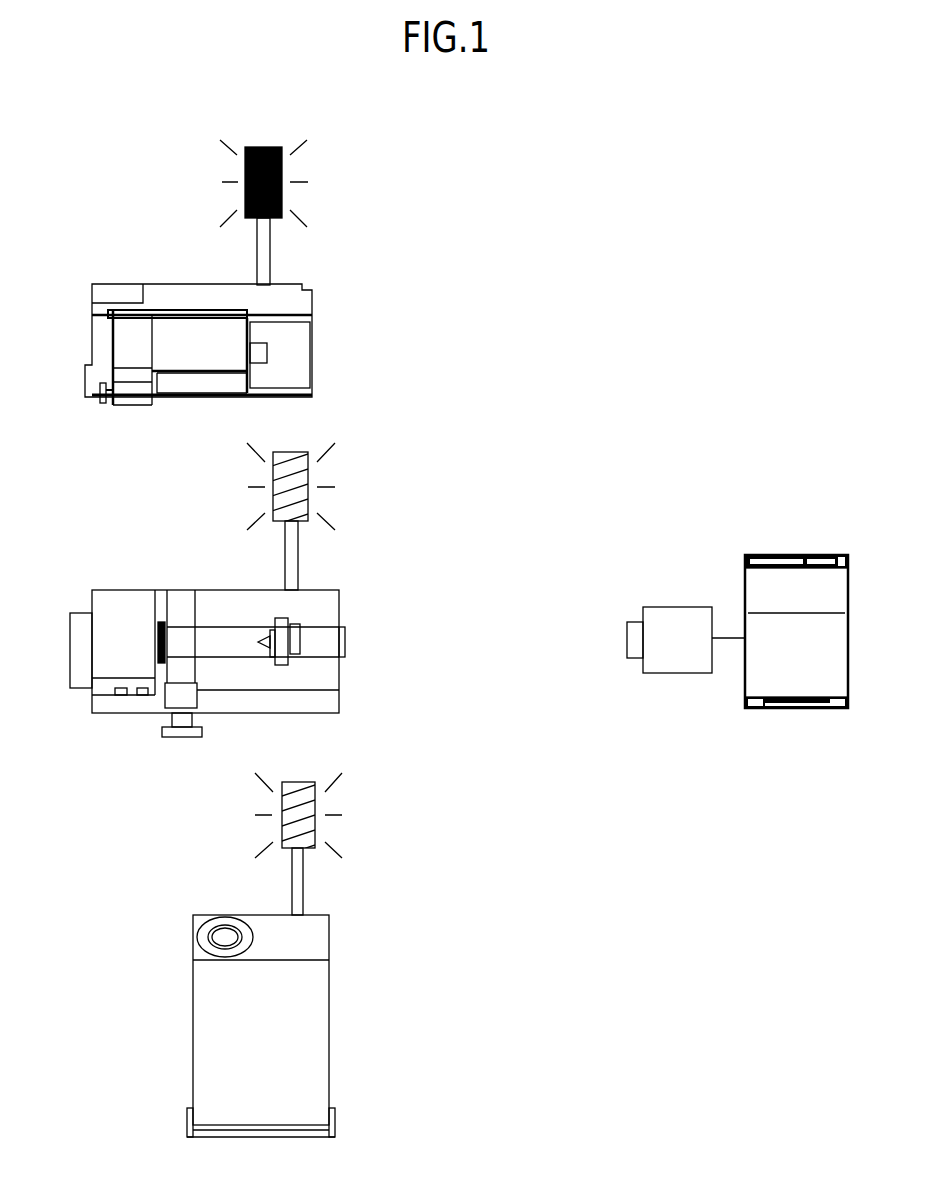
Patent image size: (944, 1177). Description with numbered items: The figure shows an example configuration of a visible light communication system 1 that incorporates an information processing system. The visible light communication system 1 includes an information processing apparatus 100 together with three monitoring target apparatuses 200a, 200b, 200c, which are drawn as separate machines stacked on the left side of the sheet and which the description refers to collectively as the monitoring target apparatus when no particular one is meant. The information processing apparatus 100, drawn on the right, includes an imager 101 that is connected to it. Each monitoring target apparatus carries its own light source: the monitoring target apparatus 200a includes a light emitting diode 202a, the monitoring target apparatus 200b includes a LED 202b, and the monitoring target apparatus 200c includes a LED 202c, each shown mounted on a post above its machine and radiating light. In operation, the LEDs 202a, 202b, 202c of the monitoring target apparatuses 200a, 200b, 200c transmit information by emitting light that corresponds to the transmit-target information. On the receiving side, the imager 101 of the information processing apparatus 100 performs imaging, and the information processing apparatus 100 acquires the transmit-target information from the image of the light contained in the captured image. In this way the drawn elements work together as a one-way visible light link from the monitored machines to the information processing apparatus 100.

The visible light communication system 1 is at (667, 217).
The information processing apparatus 100 is at (795, 553).
The imager 101 is at (678, 607).
The monitoring target apparatus 200a is at (120, 285).
The monitoring target apparatus 200b is at (135, 590).
The monitoring target apparatus 200c is at (193, 995).
The light emitting diode (LED) 202a is at (245, 190).
The LED 202b is at (273, 492).
The LED 202c is at (282, 828).